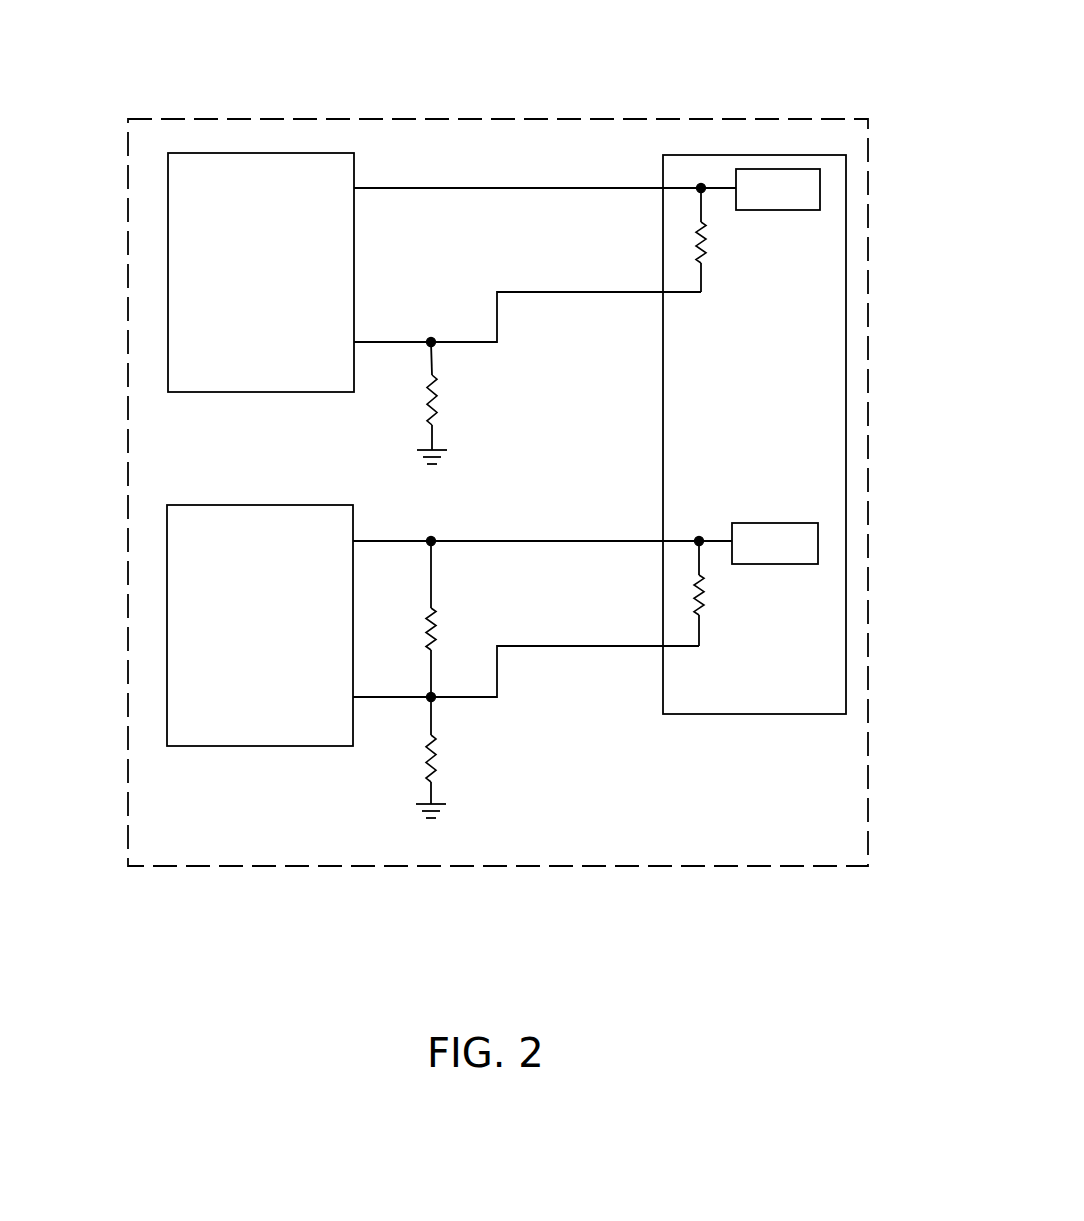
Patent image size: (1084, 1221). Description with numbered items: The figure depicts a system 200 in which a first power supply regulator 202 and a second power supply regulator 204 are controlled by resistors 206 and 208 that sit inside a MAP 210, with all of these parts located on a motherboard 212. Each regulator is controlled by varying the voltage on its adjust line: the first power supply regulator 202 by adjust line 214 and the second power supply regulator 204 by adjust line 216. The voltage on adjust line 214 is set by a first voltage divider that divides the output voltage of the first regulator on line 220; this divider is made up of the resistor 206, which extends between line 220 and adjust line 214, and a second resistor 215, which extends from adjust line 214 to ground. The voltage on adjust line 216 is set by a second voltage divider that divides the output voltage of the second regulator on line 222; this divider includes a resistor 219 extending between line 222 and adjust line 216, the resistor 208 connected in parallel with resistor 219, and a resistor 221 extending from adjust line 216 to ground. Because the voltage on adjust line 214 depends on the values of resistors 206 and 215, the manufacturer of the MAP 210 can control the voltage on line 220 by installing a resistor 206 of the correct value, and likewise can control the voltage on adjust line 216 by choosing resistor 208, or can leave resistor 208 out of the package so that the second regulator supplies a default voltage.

The system 200 is at (363, 79).
The first power supply regulator 202 is at (168, 255).
The second power supply regulator 204 is at (167, 608).
The resistor 206 is at (700, 235).
The resistor 208 is at (700, 588).
The MAP 210 is at (846, 349).
The motherboard 212 is at (601, 119).
The adjust line 214 is at (583, 292).
The second resistor 215 is at (432, 398).
The adjust line 216 is at (583, 646).
The resistor 219 is at (433, 625).
The line 220 is at (543, 188).
The resistor 221 is at (432, 753).
The line 222 is at (543, 541).